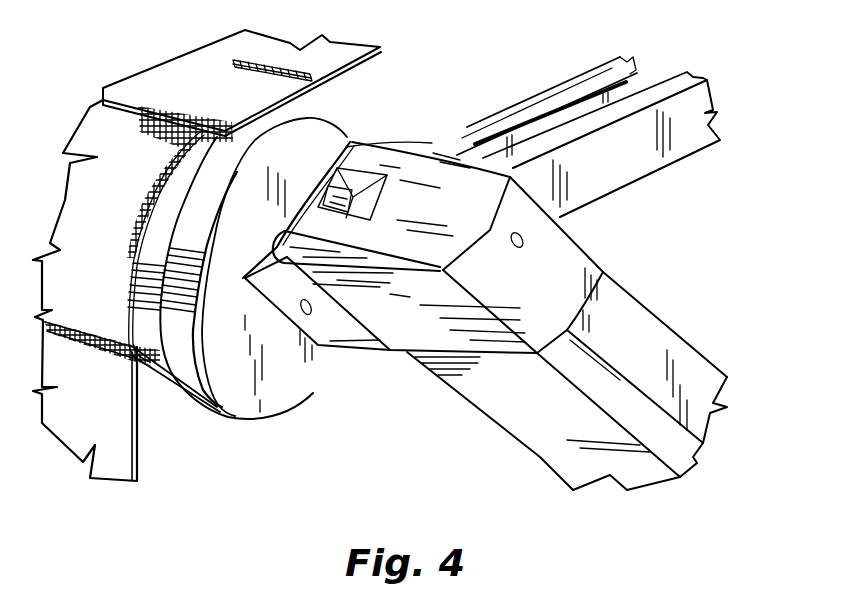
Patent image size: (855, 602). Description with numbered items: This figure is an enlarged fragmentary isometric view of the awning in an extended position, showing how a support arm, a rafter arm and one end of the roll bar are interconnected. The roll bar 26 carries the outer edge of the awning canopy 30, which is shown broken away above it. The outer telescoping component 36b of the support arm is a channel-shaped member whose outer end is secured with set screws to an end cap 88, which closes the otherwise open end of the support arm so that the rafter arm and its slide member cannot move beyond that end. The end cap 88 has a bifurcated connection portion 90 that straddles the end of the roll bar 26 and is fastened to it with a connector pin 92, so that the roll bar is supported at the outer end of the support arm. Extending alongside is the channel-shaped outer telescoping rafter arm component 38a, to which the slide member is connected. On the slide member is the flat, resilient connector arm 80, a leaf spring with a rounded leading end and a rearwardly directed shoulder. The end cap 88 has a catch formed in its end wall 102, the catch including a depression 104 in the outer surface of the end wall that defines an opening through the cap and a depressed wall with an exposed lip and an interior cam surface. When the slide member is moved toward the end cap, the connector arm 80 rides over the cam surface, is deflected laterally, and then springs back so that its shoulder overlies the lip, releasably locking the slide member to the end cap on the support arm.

The roll bar 26 is at (205, 327).
The awning canopy 30 is at (212, 57).
The outer telescoping component of the support arm 36b is at (540, 420).
The outer telescoping rafter arm component 38a is at (622, 165).
The connector arm 80 is at (352, 168).
The end cap 88 is at (463, 330).
The bifurcated connection portion 90 is at (380, 352).
The connector pin 92 is at (308, 314).
The end wall 102 is at (413, 165).
The depression 104 is at (373, 210).